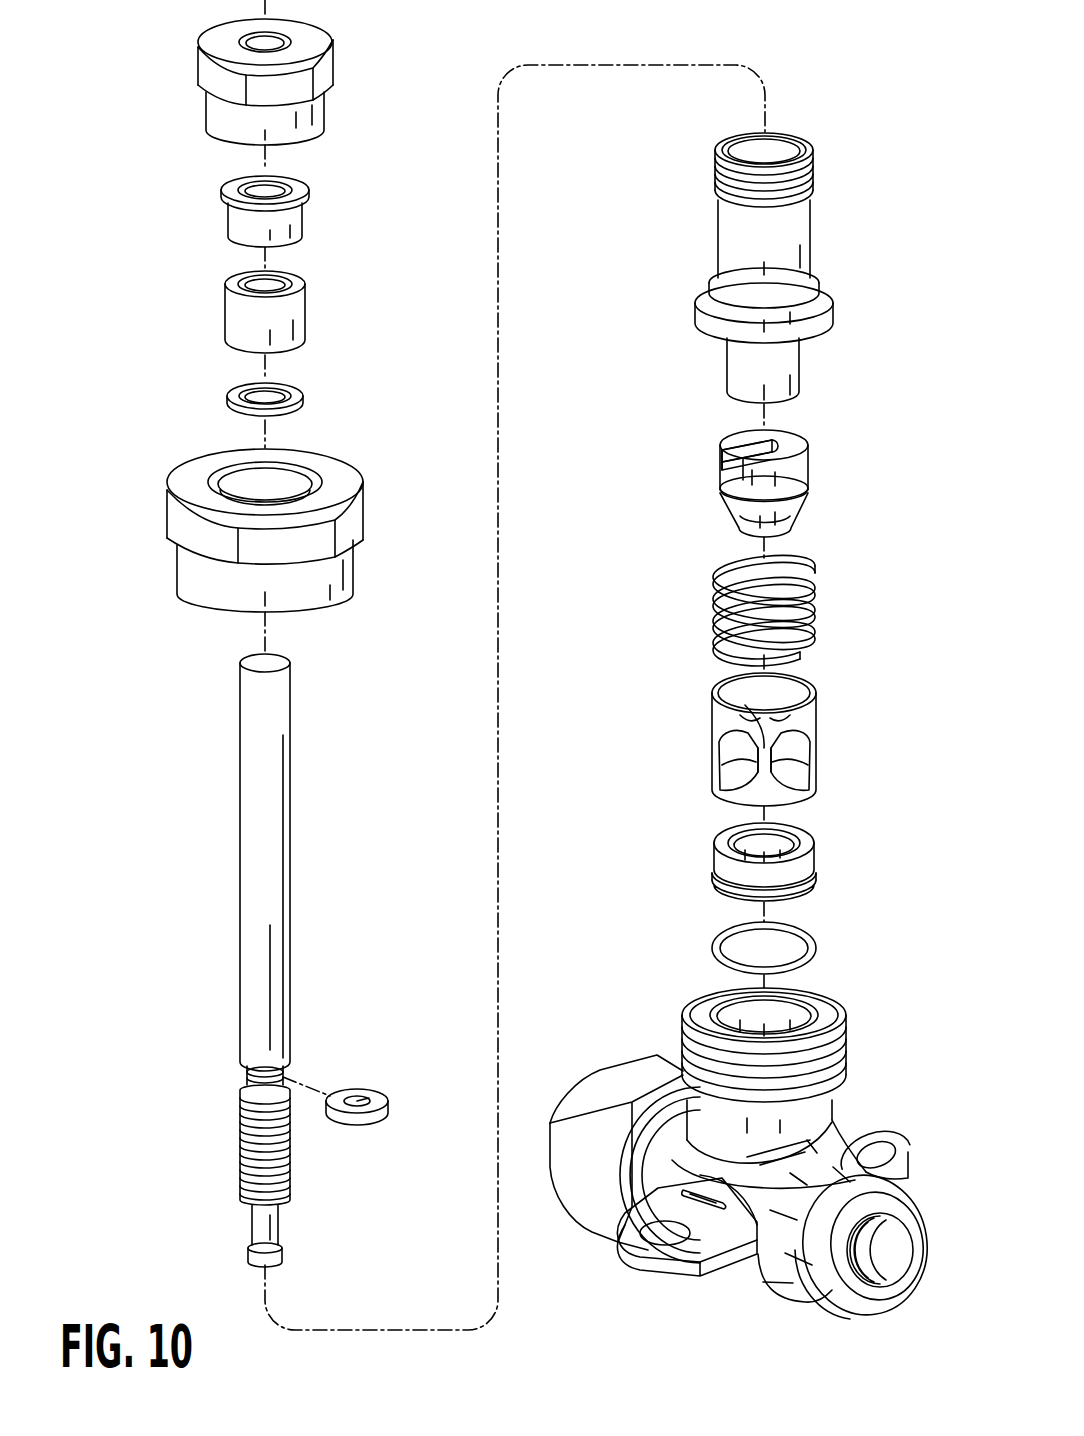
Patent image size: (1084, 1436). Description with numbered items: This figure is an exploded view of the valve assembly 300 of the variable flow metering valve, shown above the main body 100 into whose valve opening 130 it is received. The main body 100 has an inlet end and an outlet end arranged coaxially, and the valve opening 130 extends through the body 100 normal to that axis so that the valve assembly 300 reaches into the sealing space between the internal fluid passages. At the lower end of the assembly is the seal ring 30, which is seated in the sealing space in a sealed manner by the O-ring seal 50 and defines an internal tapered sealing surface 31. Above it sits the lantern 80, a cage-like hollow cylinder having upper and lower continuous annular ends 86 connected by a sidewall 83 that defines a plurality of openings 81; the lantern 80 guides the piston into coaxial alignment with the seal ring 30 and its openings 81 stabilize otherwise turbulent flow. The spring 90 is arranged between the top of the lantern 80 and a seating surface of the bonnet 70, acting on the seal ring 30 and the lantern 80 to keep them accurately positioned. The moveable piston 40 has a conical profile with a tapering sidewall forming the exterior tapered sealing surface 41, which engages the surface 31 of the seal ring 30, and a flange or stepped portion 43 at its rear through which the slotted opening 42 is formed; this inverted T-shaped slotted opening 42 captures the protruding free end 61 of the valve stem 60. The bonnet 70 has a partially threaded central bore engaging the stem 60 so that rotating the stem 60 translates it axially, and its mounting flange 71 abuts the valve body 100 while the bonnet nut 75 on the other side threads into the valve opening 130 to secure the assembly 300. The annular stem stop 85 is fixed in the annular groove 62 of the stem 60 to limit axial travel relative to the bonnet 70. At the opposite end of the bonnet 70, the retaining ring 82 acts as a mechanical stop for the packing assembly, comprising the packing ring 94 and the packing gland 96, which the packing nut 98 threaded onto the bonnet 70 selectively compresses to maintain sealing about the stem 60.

The packing nut 98 is at (325, 68).
The packing gland 96 is at (300, 222).
The packing ring 94 is at (295, 322).
The retaining ring 82 is at (300, 396).
The bonnet nut 75 is at (350, 510).
The valve stem 60 is at (277, 872).
The annular channel or groove 62 is at (240, 1078).
The protruding free end or head 61 is at (282, 1255).
The annular stem stop 85 is at (380, 1098).
The valve assembly 300 is at (832, 131).
The bonnet 70 is at (798, 236).
The mounting flange 71 is at (830, 296).
The moveable piston 40 is at (798, 460).
The flange or stepped portion 43 is at (747, 451).
The slotted opening 42 is at (718, 480).
The exterior tapered sealing surface 41 is at (795, 500).
The spring 90 is at (808, 612).
The lantern 80 is at (763, 717).
The continuous annular ends 86 is at (722, 680).
The sidewall 83 is at (762, 750).
The openings 81 is at (718, 786).
The internal tapered sealing surface 31 is at (790, 838).
The seal ring 30 is at (807, 848).
The O-ring seal 50 is at (815, 937).
The valve opening 130 is at (827, 1004).
The main body 100 is at (747, 1163).